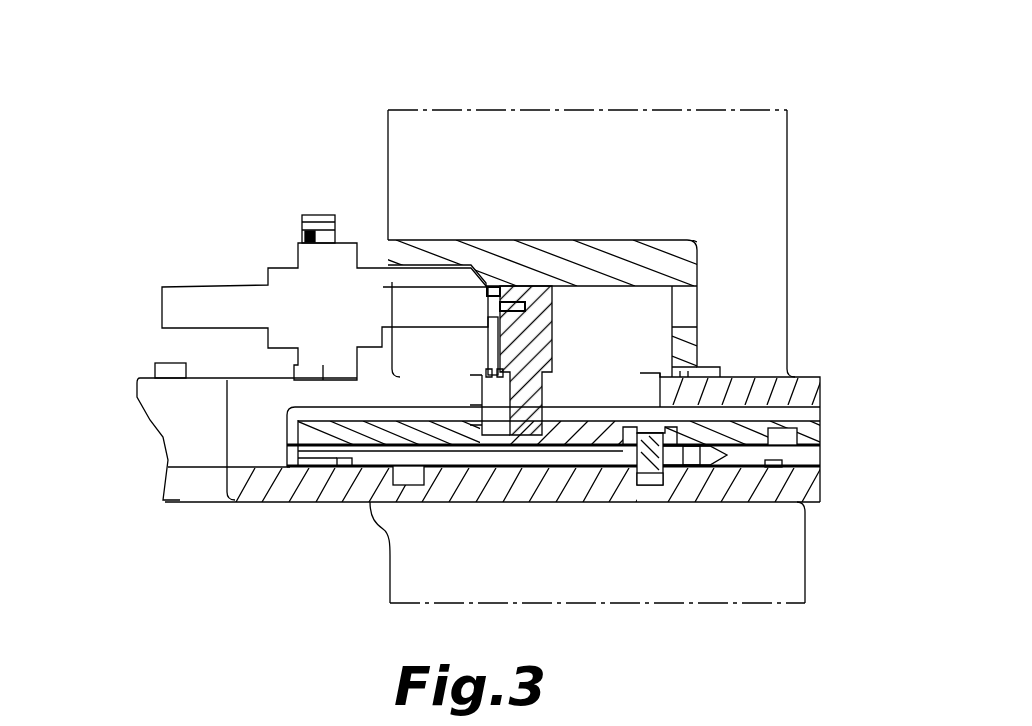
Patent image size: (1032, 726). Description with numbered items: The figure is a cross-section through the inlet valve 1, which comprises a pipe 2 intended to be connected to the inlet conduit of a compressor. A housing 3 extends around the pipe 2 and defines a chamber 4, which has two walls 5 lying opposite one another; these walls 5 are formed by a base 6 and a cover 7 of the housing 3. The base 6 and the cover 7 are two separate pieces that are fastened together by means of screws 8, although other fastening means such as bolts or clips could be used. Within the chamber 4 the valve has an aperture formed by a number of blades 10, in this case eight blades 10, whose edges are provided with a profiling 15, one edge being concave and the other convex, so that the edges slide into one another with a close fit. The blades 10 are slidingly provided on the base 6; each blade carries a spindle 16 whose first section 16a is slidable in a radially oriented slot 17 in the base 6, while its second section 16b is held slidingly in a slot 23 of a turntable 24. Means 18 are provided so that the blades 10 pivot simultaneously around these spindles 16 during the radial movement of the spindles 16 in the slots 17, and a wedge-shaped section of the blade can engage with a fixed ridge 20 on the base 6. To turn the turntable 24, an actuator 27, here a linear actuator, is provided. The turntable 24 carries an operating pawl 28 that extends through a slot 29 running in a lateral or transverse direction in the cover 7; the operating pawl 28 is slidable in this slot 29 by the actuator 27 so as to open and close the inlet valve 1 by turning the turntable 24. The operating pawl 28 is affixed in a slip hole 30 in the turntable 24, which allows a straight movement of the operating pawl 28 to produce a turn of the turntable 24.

The inlet valve 1 is at (186, 125).
The pipe 2 is at (463, 138).
The housing 3 is at (194, 565).
The chamber 4 is at (765, 415).
The walls 5 is at (740, 377).
The base 6 is at (795, 485).
The cover 7 is at (264, 420).
The screws 8 is at (168, 368).
The blades 10 is at (437, 483).
The profiling 15 is at (510, 453).
The spindle 16 is at (645, 485).
The first section 16a is at (655, 485).
The second section 16b is at (655, 430).
The radially oriented slot 17 is at (665, 485).
The means 18 is at (793, 470).
The fixed ridge 20 is at (775, 467).
The slot 23 is at (628, 425).
The turntable 24 is at (330, 437).
The actuator 27 is at (288, 290).
The operating pawl 28 is at (525, 345).
The slot 29 is at (548, 390).
The slip hole 30 is at (490, 428).